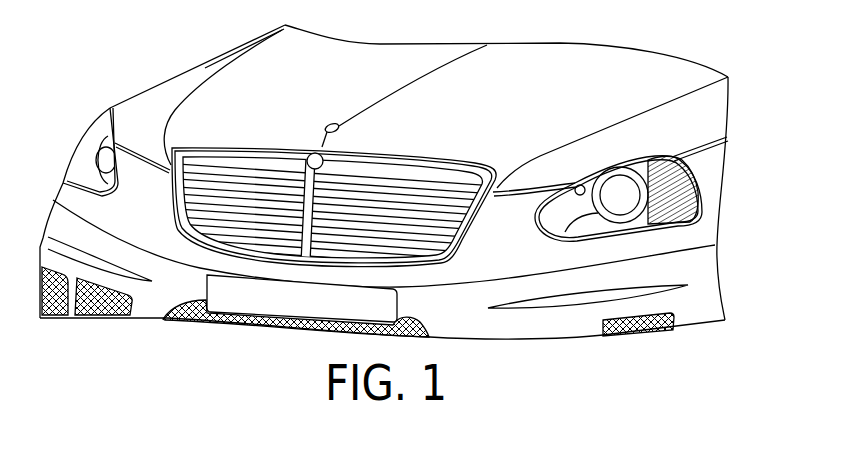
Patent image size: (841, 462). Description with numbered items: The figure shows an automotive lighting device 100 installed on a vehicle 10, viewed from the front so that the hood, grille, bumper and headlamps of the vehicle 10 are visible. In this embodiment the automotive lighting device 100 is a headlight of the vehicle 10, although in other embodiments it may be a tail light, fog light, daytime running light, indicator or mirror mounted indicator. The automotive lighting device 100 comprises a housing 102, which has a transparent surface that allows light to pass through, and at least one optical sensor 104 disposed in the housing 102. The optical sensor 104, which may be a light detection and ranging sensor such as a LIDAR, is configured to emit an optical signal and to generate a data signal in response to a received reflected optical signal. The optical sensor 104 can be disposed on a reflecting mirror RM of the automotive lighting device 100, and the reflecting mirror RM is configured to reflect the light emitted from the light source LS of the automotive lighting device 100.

The vehicle 10 is at (207, 55).
The automotive lighting device 100 is at (670, 153).
The housing 102 is at (685, 225).
The light source LS is at (702, 196).
The reflecting mirror RM is at (563, 214).
The optical sensor 104 is at (580, 185).